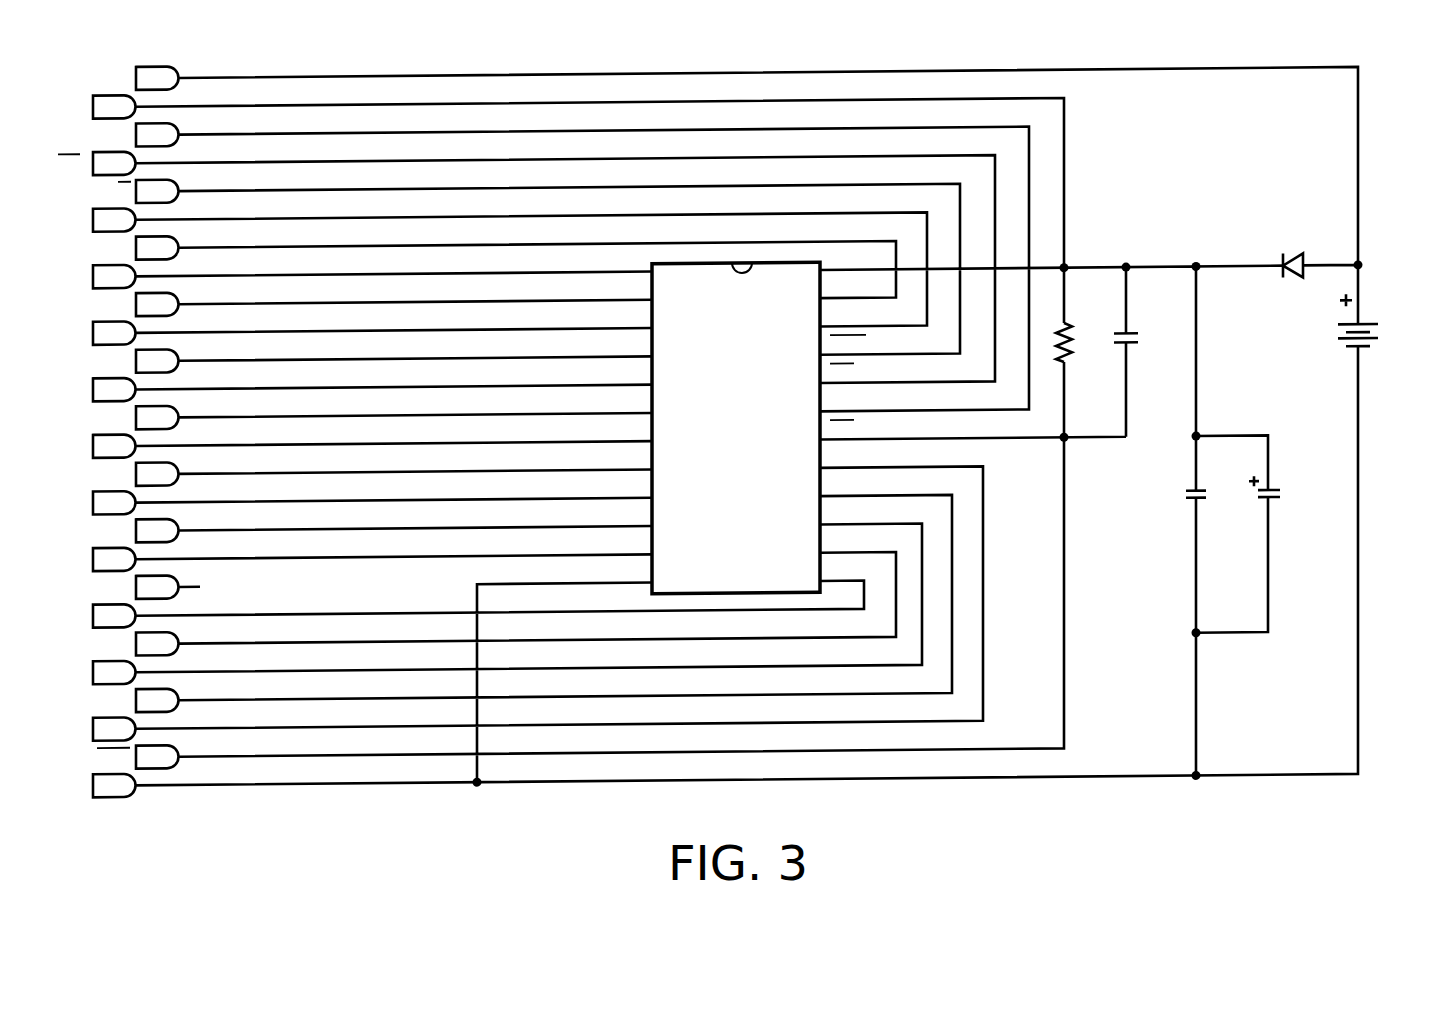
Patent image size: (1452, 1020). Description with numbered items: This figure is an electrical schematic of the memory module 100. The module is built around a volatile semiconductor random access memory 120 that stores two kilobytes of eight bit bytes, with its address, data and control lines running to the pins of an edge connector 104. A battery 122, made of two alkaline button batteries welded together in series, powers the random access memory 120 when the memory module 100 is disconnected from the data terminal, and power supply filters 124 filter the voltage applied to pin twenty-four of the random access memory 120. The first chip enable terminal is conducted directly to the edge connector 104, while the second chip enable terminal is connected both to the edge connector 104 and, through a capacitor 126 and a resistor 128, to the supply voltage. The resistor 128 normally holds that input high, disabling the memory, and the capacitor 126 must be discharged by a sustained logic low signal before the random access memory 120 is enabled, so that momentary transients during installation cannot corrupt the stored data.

The memory module 100 is at (1380, 693).
The edge connector 104 is at (124, 798).
The random access memory 120 is at (721, 532).
The battery 122 is at (1360, 360).
The power supply filters 124 is at (1263, 513).
The capacitor 126 is at (1121, 358).
The resistor 128 is at (1072, 340).